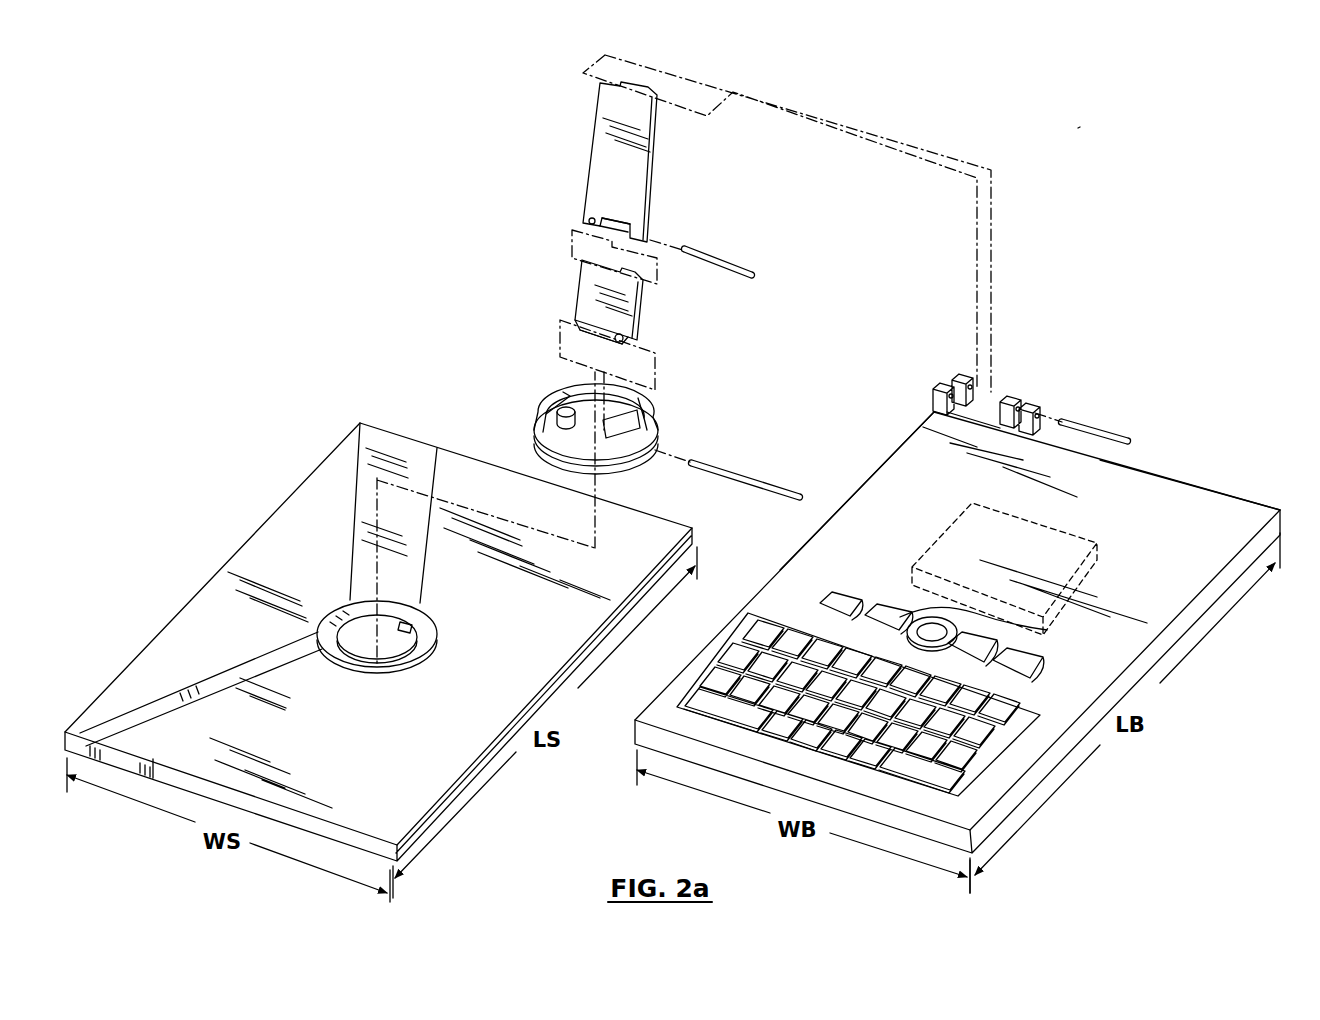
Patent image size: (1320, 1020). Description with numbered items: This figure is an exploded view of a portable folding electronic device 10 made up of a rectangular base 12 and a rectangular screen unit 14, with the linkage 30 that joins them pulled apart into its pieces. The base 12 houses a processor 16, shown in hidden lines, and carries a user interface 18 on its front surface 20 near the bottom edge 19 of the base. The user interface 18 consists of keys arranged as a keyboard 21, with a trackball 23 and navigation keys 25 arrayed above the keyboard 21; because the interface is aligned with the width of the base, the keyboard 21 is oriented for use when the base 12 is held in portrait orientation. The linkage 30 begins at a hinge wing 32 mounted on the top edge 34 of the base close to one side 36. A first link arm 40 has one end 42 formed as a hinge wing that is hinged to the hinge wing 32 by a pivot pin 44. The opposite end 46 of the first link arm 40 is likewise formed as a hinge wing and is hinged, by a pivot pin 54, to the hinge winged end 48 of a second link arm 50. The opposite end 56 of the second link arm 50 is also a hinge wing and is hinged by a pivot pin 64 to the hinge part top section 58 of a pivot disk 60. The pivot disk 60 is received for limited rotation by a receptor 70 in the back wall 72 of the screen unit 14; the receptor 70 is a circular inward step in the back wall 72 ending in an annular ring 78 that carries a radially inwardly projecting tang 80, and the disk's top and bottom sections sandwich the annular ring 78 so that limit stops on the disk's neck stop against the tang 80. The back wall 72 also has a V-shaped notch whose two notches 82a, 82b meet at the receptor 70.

The portable folding electronic device 10 is at (1082, 127).
The rectangular base 12 is at (927, 594).
The rectangular screen unit 14 is at (378, 609).
The processor 16 is at (1043, 527).
The user interface 18 is at (858, 649).
The bottom edge 19 is at (645, 735).
The front surface 20 is at (1159, 534).
The keyboard 21 is at (698, 660).
The trackball 23 is at (1043, 631).
The navigation keys 25 is at (853, 600).
The linkage 30 is at (731, 277).
The hinge wing 32 is at (1000, 388).
The top edge 34 is at (1197, 478).
The side 36 is at (877, 463).
The first link arm 40 is at (660, 182).
The end 42 is at (640, 86).
The pivot pin 44 is at (1097, 428).
The opposite end 46 is at (588, 220).
The hinge winged end 48 is at (608, 255).
The second link arm 50 is at (583, 292).
The pivot pin 54 is at (722, 262).
The opposite end 56 is at (600, 345).
The hinge part top section 58 is at (565, 406).
The pivot disk 60 is at (535, 438).
The pivot pin 64 is at (758, 480).
The receptor 70 is at (372, 645).
The back wall 72 is at (490, 622).
The annular ring 78 is at (347, 613).
The tang 80 is at (400, 630).
The notch 82a is at (190, 705).
The notch 82b is at (368, 537).